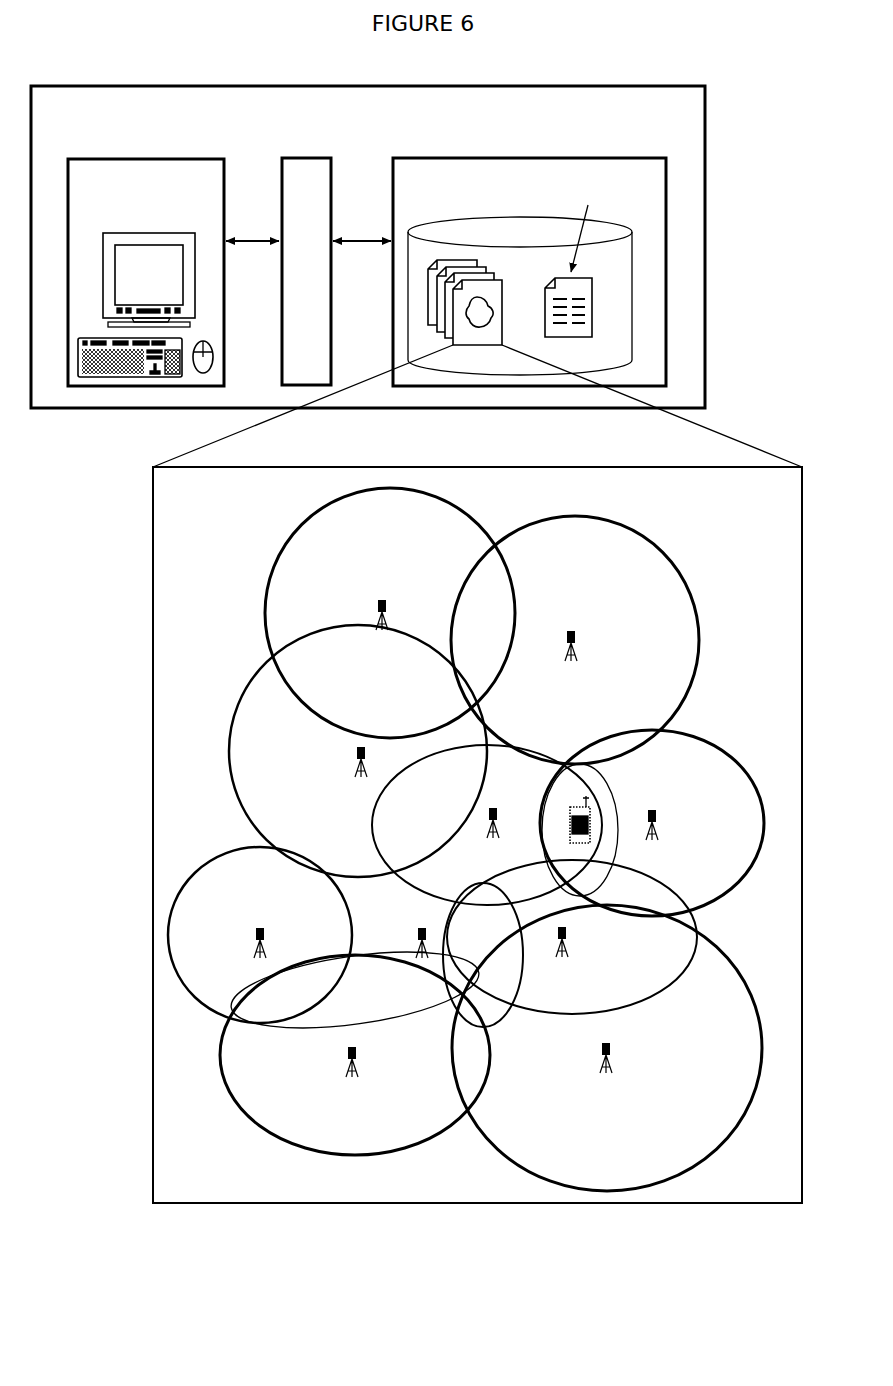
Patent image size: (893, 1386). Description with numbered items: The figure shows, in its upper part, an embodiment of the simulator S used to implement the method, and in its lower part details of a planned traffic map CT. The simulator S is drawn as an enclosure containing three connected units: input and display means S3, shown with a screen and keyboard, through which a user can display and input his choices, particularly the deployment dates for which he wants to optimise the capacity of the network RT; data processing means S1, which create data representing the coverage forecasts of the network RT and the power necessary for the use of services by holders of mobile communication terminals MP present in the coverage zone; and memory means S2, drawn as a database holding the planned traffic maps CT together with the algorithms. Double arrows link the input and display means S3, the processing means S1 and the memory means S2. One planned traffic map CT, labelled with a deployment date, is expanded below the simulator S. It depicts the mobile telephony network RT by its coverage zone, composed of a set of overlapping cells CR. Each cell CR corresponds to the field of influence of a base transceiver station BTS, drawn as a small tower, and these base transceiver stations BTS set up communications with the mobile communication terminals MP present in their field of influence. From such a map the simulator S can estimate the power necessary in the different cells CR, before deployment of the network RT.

The simulator S is at (714, 136).
The data processing means S1 is at (311, 158).
The memory means S2 is at (413, 330).
The input and display means S3 is at (165, 159).
The planned traffic map CT is at (466, 252).
The base transceiver station BTS is at (484, 814).
The mobile communication terminal MP is at (594, 809).
The cell CR is at (346, 1009).
The mobile telephony network RT is at (250, 1135).